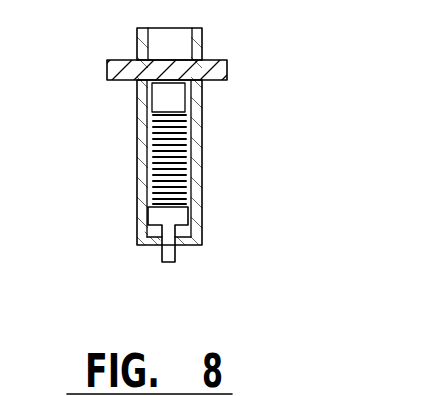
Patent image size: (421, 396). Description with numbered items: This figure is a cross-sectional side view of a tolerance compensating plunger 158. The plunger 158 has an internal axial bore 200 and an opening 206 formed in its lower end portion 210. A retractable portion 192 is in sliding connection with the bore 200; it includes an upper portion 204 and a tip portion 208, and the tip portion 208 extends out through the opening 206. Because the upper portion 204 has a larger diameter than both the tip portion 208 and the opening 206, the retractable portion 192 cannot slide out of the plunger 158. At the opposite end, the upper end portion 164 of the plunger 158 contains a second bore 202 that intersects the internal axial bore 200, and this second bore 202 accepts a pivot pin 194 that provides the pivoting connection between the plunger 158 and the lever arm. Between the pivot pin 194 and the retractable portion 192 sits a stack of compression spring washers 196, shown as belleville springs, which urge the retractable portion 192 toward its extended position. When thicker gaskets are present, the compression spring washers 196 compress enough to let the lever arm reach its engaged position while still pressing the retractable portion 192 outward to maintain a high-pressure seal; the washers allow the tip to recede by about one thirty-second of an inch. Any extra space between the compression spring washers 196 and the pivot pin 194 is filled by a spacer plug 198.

The upper end portion 164 is at (131, 50).
The second bore 202 is at (202, 58).
The pivot pin 194 is at (228, 72).
The spacer plug 198 is at (150, 88).
The plunger 158 is at (202, 133).
The compression spring washers 196 is at (156, 152).
The retractable portion 192 is at (149, 208).
The internal axial bore 200 is at (189, 172).
The upper portion 204 is at (188, 215).
The opening 206 is at (177, 248).
The tip portion 208 is at (172, 263).
The lower end portion 210 is at (150, 246).